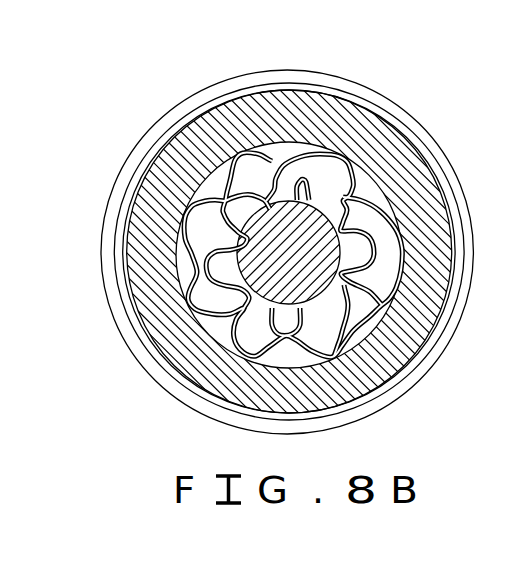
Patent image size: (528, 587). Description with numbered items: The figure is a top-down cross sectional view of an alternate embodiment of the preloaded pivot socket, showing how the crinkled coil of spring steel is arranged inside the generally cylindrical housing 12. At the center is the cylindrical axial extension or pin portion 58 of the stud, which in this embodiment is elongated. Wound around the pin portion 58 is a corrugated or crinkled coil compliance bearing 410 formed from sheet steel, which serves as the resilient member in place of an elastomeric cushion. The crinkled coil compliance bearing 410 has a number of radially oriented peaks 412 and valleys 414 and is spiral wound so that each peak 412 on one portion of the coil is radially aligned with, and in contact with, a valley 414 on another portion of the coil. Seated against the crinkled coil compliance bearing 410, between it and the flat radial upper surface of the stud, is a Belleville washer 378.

The housing 12 is at (130, 222).
The Belleville washer 378 is at (199, 124).
The crinkled coil compliance bearing 410 is at (190, 175).
The pin portion 58 is at (284, 246).
The peak 412 is at (353, 186).
The valley 414 is at (316, 185).